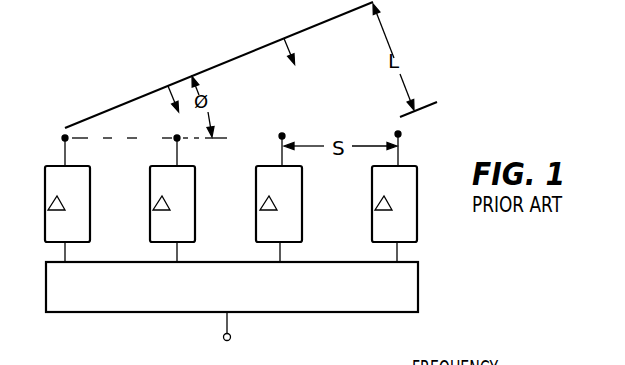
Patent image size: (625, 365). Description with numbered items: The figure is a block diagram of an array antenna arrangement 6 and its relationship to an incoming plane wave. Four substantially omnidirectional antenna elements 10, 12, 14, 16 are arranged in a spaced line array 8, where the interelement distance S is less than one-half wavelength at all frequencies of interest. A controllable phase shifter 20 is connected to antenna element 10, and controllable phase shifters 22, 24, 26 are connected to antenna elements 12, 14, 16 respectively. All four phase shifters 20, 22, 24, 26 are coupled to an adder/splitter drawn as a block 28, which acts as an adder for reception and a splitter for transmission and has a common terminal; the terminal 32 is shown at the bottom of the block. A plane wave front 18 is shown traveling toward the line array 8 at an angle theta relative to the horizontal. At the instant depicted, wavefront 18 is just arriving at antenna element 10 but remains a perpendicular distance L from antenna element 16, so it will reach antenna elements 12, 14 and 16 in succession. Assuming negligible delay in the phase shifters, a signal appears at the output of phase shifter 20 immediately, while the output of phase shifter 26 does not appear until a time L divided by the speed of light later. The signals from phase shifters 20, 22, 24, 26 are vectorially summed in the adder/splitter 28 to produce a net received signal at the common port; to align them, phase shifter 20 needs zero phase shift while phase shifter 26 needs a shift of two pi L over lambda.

The array antenna arrangement 6 is at (302, 342).
The spaced line array 8 is at (222, 164).
The antenna element 10 is at (62, 138).
The antenna element 12 is at (174, 138).
The antenna element 14 is at (280, 133).
The antenna element 16 is at (396, 131).
The plane wave front 18 is at (230, 60).
The controllable phase shifter 20 is at (45, 200).
The controllable phase shifter 22 is at (150, 218).
The controllable phase shifter 24 is at (256, 217).
The controllable phase shifter 26 is at (372, 217).
The adder/splitter 28 is at (418, 277).
The input/output terminal 32 is at (223, 337).